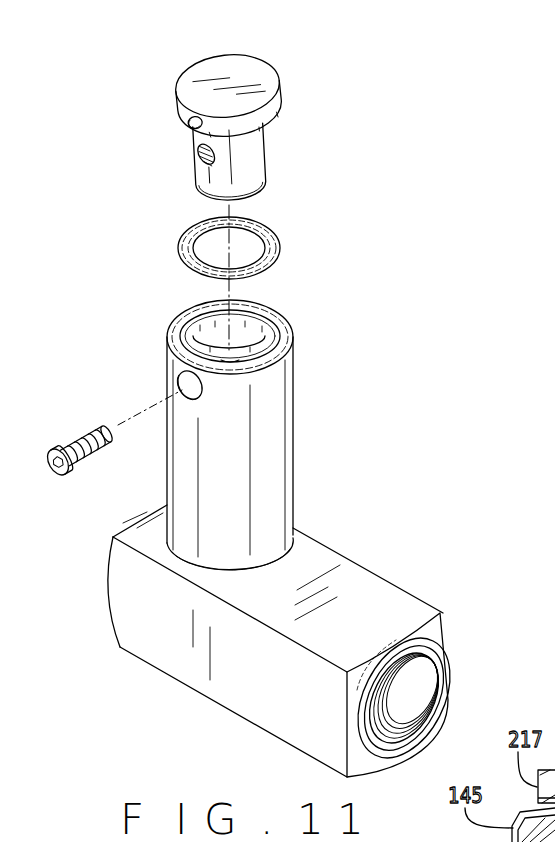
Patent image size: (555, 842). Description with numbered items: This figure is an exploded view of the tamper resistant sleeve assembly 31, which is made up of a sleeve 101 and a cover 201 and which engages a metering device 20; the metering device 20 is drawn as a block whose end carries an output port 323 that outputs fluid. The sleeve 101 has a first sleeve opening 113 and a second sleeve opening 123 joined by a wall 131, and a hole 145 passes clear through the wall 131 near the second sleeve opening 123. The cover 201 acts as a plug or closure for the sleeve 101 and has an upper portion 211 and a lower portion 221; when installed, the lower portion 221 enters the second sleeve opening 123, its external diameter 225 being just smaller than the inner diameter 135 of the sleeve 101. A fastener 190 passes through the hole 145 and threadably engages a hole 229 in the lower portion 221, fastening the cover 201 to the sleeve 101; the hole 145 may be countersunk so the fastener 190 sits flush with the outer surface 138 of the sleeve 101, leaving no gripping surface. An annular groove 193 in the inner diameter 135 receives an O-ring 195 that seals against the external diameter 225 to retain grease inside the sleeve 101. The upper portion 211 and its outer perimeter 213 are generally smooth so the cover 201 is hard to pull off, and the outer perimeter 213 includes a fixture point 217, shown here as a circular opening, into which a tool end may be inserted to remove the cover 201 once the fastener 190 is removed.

The metering device 20 is at (353, 600).
The tamper resistant sleeve assembly 31 is at (98, 45).
The sleeve 101 is at (312, 476).
The first sleeve opening 113 is at (204, 578).
The second sleeve opening 123 is at (285, 333).
The wall 131 is at (267, 440).
The inner diameter 135 is at (256, 326).
The outer surface 138 is at (182, 423).
The hole 145 is at (180, 373).
The fastener 190 is at (76, 440).
The annular groove 193 is at (210, 343).
The O-ring 195 is at (272, 236).
The cover 201 is at (286, 141).
The upper portion 211 is at (259, 80).
The outer perimeter 213 is at (280, 110).
The fixture point 217 is at (188, 113).
The lower portion 221 is at (252, 160).
The external diameter 225 is at (208, 176).
The hole 229 is at (201, 152).
The output port 323 is at (428, 684).